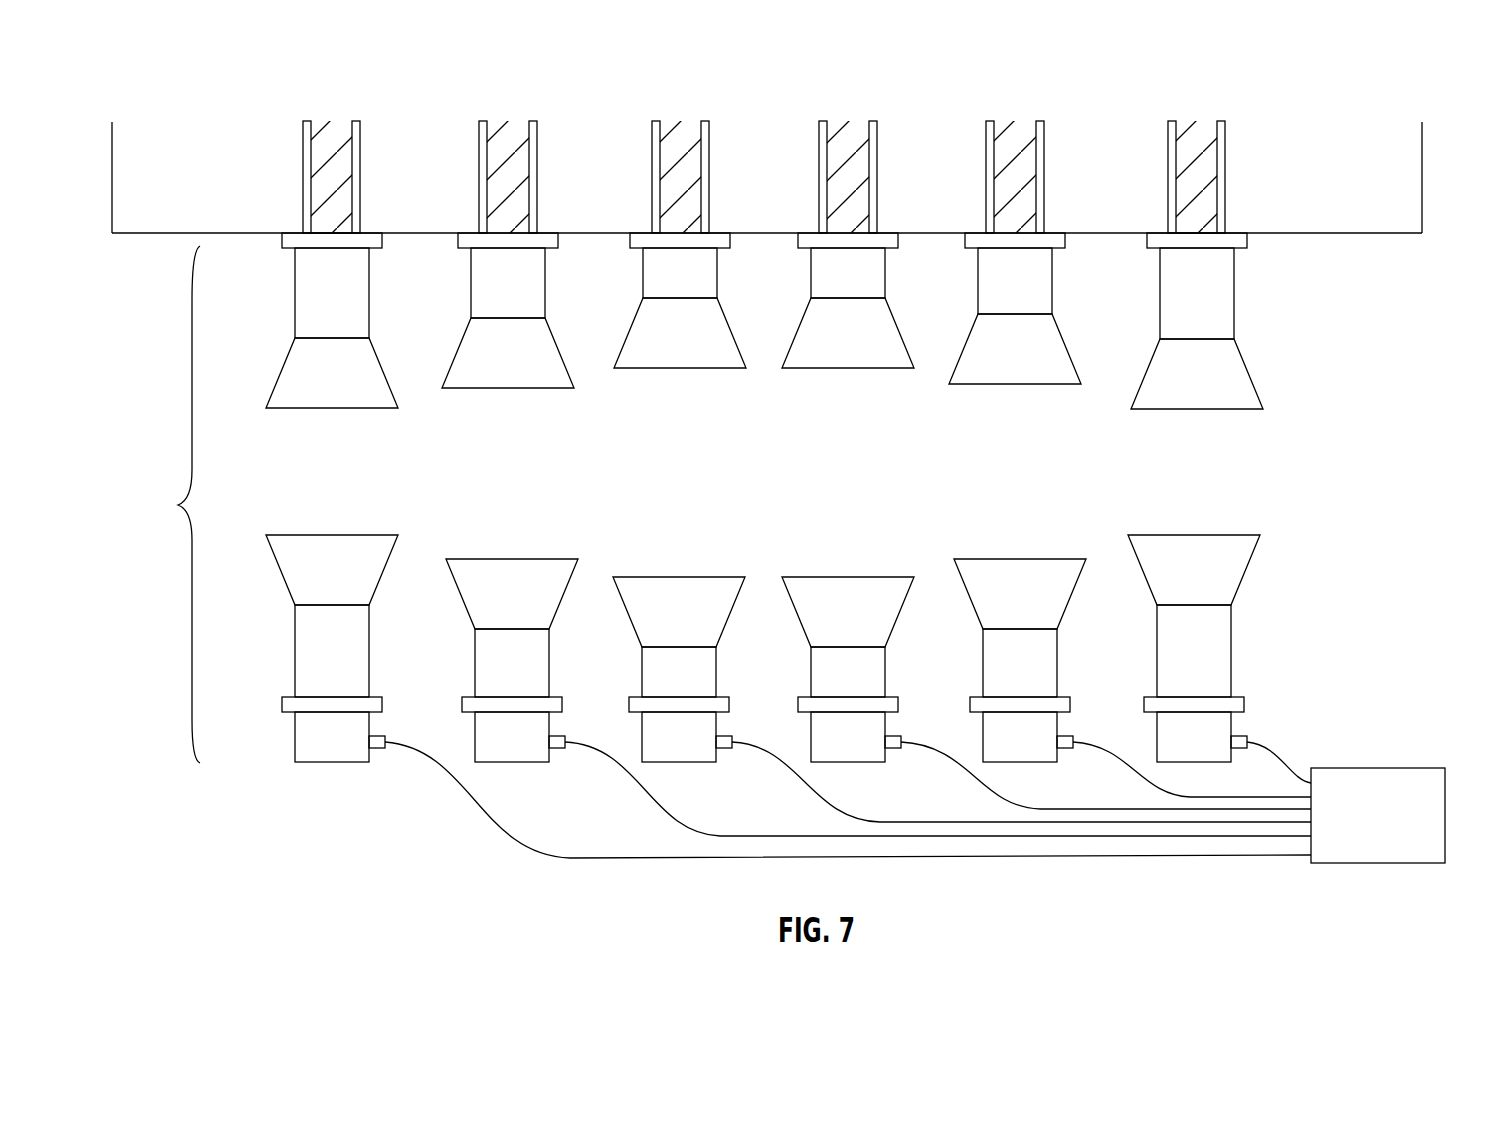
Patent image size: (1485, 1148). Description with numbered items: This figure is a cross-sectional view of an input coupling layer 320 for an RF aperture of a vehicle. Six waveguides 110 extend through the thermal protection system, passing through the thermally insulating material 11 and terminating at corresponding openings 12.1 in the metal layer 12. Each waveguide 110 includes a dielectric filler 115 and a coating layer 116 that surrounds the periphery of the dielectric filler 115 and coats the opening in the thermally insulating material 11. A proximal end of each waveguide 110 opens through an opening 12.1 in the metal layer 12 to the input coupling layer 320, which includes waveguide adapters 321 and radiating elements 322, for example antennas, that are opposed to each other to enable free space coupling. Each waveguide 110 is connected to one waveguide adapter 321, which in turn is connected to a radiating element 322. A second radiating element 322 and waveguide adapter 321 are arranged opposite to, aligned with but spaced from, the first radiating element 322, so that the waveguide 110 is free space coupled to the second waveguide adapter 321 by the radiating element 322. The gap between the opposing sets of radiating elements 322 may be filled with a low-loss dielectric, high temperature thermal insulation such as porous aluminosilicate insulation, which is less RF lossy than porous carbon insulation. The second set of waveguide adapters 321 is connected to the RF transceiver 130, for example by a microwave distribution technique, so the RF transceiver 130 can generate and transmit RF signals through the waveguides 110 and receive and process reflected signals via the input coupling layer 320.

The thermally insulating material 11 is at (1410, 157).
The metal layer 12 is at (1400, 236).
The opening 12.1 is at (325, 232).
The waveguide 110 is at (726, 147).
The dielectric filler 115 is at (343, 168).
The coating layer 116 is at (303, 158).
The RF transceiver 130 is at (1405, 863).
The input coupling layer 320 is at (178, 505).
The waveguide adapter 321 is at (296, 300).
The radiating element 322 is at (283, 373).